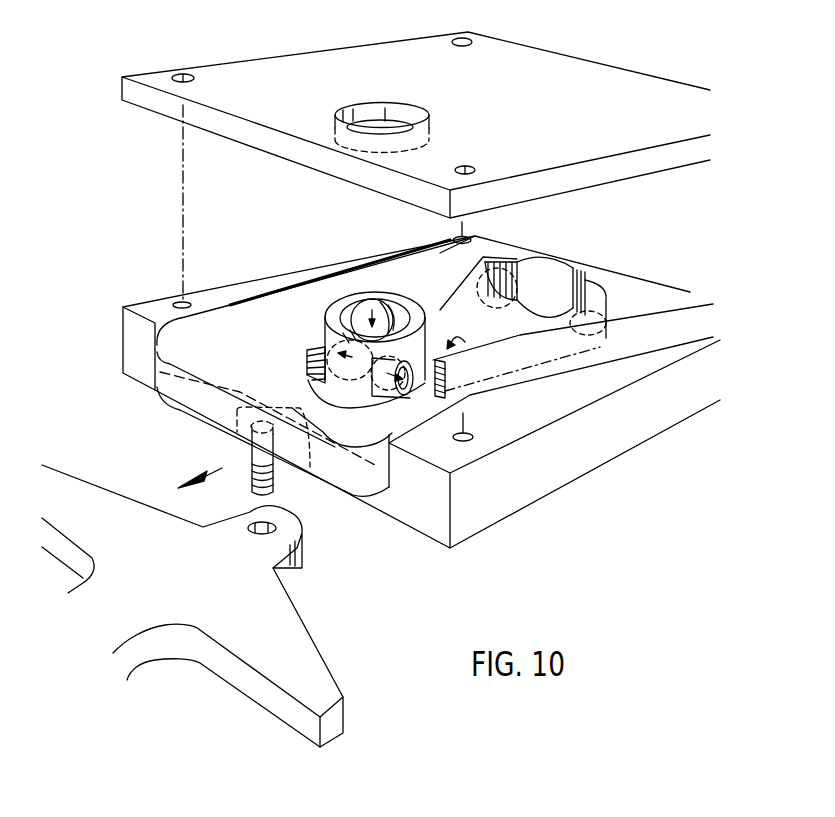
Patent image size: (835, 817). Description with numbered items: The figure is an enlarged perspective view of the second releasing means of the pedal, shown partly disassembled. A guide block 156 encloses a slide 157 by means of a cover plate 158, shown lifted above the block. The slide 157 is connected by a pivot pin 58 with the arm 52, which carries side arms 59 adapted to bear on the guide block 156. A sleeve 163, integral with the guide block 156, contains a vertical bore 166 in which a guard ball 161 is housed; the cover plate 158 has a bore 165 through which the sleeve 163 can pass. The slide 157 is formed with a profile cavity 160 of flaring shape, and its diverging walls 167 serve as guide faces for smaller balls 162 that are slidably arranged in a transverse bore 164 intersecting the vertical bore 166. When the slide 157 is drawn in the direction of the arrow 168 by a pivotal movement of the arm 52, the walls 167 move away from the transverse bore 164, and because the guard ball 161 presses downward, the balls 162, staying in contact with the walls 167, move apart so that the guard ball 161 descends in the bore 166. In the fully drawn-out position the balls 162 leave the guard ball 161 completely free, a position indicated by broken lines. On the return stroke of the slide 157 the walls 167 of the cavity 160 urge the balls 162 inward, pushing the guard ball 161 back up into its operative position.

The cover plate 158 is at (563, 72).
The bore 165 is at (398, 110).
The guide block 156 is at (448, 518).
The profile cavity 160 is at (452, 302).
The guard ball 161 is at (357, 307).
The vertical bore 166 is at (323, 312).
The sleeve 163 is at (388, 296).
The balls 162 is at (388, 382).
The transverse bore 164 is at (410, 398).
The diverging walls 167 is at (452, 290).
The slide 157 is at (362, 497).
The pivot pin 58 is at (273, 475).
The arrow 168 is at (221, 468).
The arm 52 is at (108, 625).
The side arms 59 is at (321, 693).